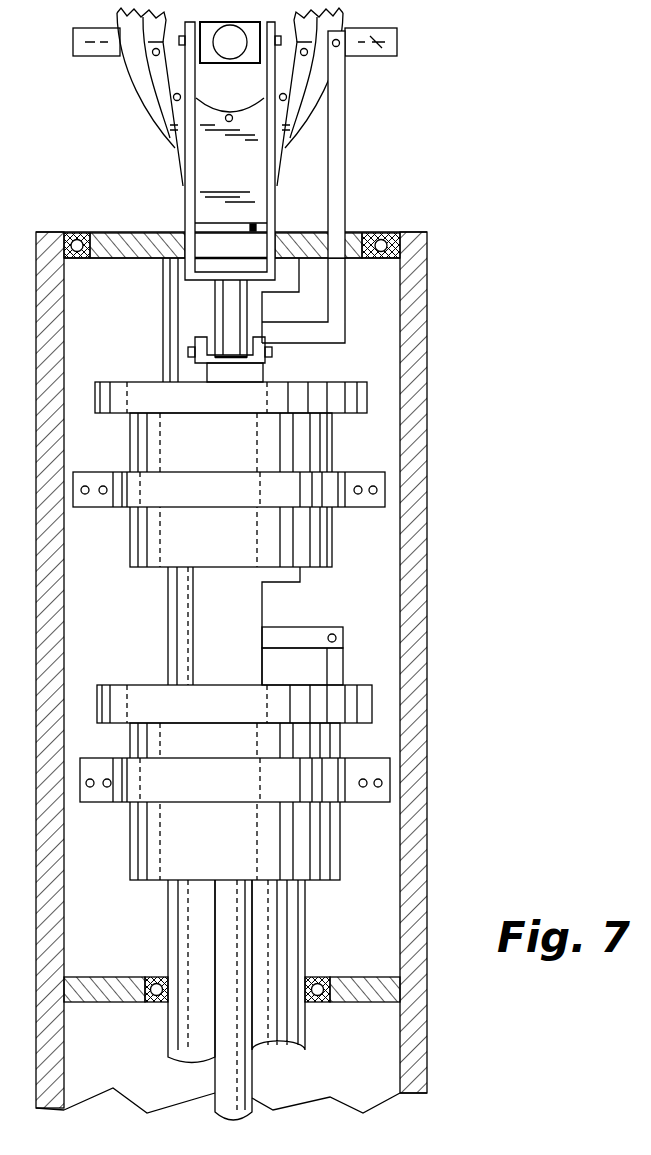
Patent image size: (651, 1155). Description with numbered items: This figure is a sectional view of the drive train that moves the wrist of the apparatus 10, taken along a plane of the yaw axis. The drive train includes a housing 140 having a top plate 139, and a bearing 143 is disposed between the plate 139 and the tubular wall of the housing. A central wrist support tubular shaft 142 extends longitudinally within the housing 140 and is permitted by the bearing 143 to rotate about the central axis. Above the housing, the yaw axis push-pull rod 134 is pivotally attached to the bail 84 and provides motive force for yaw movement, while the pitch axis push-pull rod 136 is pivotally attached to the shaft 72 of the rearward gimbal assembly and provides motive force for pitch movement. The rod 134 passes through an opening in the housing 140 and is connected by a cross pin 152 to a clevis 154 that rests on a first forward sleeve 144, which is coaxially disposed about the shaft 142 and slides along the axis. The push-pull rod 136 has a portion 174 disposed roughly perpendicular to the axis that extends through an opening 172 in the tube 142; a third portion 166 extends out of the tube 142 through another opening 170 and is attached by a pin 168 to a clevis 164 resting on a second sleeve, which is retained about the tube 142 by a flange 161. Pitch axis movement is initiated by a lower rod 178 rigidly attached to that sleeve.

The clamping apparatus 10 is at (132, 137).
The shaft 72 is at (372, 40).
The bail 84 is at (136, 79).
The yaw axis push-pull rod 134 is at (222, 300).
The pitch axis push-pull rod 136 is at (335, 131).
The top plate 139 is at (154, 232).
The housing 140 is at (410, 287).
The central wrist support tubular shaft 142 is at (182, 605).
The bearing 143 is at (78, 232).
The first forward sleeve 144 is at (333, 437).
The cross pin 152 is at (193, 348).
The clevis 154 is at (205, 372).
The flange 161 is at (380, 792).
The clevis 164 is at (335, 668).
The third portion 166 is at (277, 637).
The pin 168 is at (331, 633).
The opening 170 is at (265, 598).
The opening 172 is at (262, 311).
The portion 174 is at (303, 333).
The lower rod 178 is at (255, 1081).